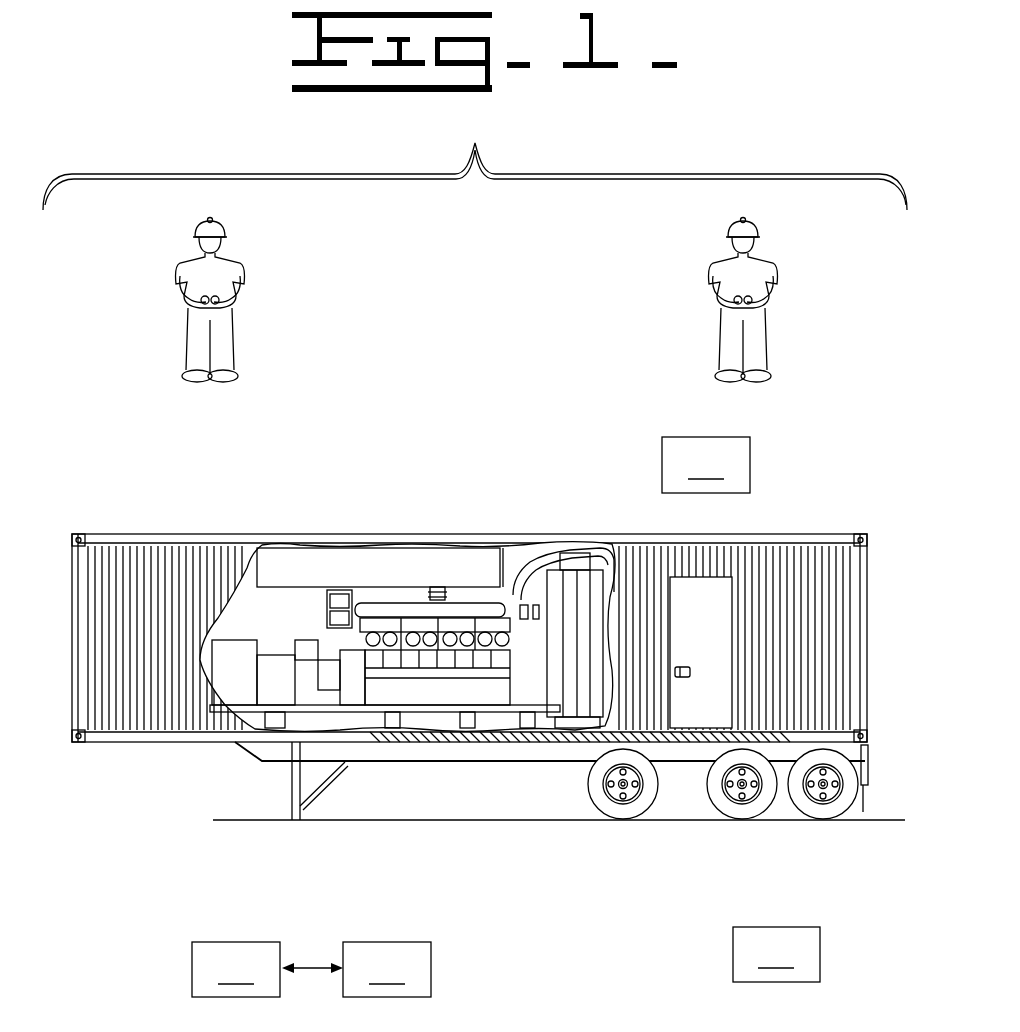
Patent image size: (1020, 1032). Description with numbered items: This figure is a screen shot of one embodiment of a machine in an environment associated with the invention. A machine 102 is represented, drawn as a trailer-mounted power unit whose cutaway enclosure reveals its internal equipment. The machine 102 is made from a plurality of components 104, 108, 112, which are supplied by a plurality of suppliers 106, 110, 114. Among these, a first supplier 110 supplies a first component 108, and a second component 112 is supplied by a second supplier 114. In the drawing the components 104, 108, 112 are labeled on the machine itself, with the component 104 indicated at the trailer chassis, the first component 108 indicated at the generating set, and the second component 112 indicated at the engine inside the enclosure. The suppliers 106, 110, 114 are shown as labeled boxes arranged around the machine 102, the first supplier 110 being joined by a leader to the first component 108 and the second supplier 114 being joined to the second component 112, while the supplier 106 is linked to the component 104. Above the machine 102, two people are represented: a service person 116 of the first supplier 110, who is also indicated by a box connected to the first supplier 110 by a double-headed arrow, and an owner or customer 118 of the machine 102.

The machine 102 is at (457, 474).
The component 104 is at (655, 735).
The supplier 106 is at (776, 954).
The first component 108 is at (563, 743).
The first supplier 110 is at (356, 969).
The second component 112 is at (462, 630).
The second supplier 114 is at (706, 465).
The service person 116 is at (727, 333).
The owner or customer 118 is at (232, 335).